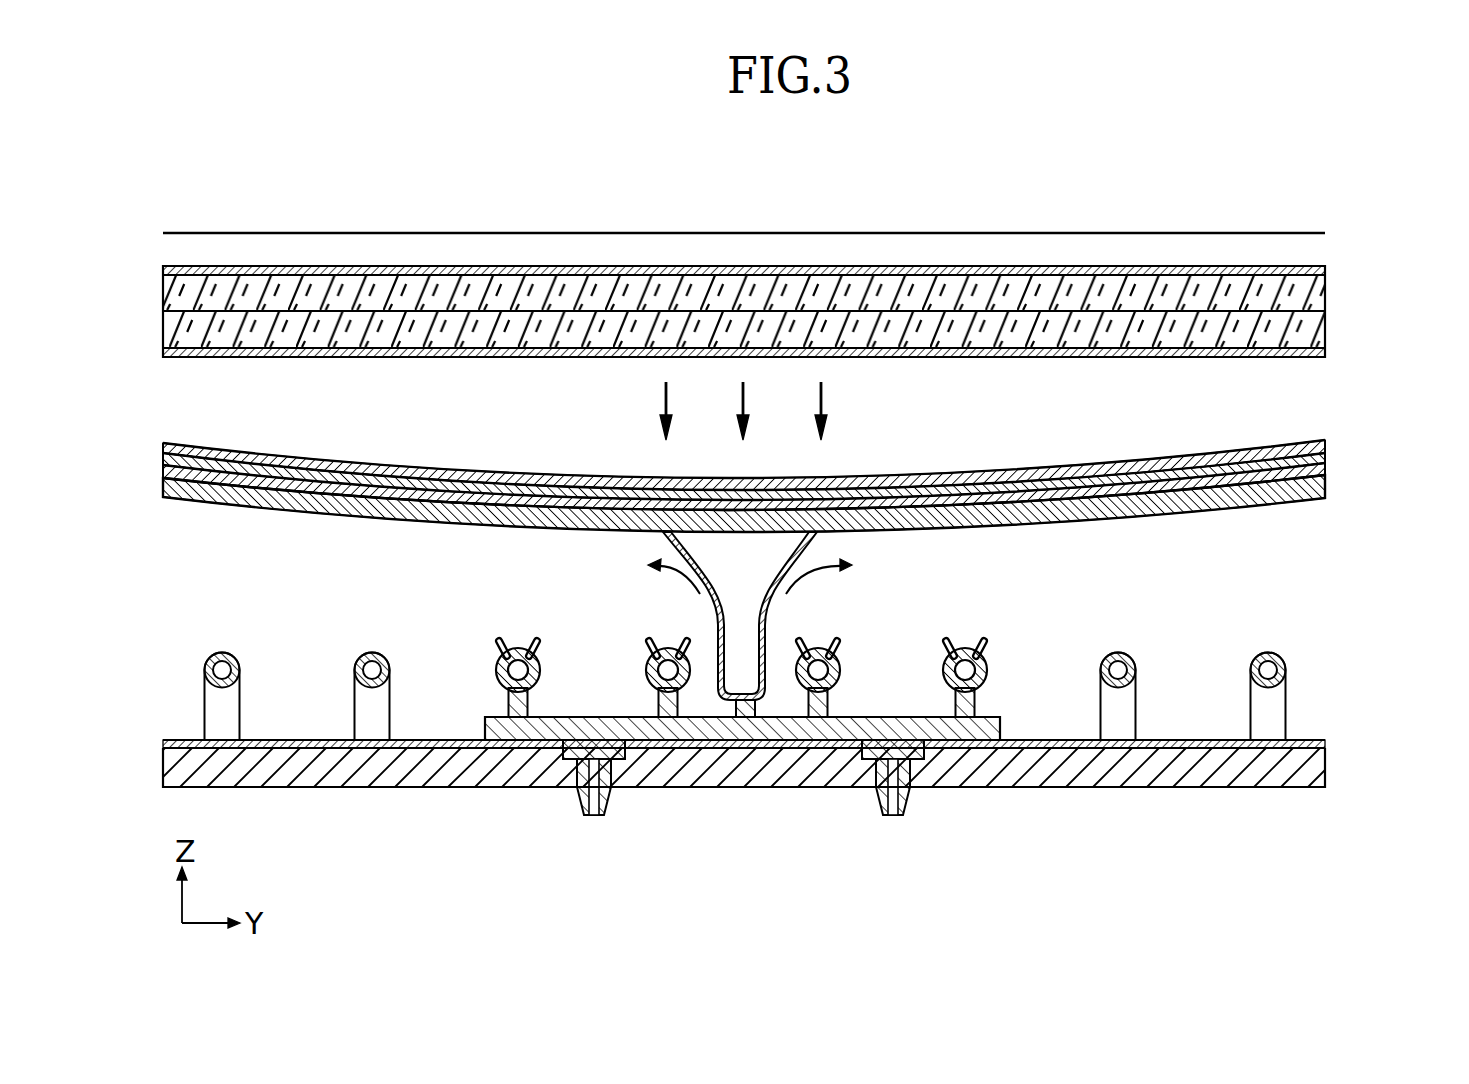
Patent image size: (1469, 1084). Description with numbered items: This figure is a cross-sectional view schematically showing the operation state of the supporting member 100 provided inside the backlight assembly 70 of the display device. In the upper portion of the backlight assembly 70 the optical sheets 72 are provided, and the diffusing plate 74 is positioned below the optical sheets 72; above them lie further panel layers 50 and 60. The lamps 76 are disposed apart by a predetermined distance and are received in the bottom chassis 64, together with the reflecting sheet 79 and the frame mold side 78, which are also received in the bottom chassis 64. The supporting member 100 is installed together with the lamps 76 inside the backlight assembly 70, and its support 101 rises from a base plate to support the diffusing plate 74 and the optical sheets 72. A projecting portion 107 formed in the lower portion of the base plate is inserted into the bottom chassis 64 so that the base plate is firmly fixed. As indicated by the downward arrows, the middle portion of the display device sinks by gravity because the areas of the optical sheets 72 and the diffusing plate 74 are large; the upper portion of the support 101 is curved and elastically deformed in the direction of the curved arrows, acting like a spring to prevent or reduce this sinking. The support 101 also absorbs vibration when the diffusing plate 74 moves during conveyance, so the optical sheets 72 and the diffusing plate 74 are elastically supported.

The display panel 60 is at (1295, 243).
The touch panel stack 50 is at (1336, 266).
The backlight assembly 70 is at (804, 648).
The optical sheets 72 is at (1333, 440).
The diffusing plate 74 is at (1312, 482).
The frame mold side 78 is at (1255, 578).
The lamps 76 is at (1278, 652).
The reflecting sheet 79 is at (1312, 742).
The bottom chassis 64 is at (776, 773).
The supporting member 100 is at (694, 696).
The support 101 is at (715, 658).
The projecting portion 107 is at (905, 800).